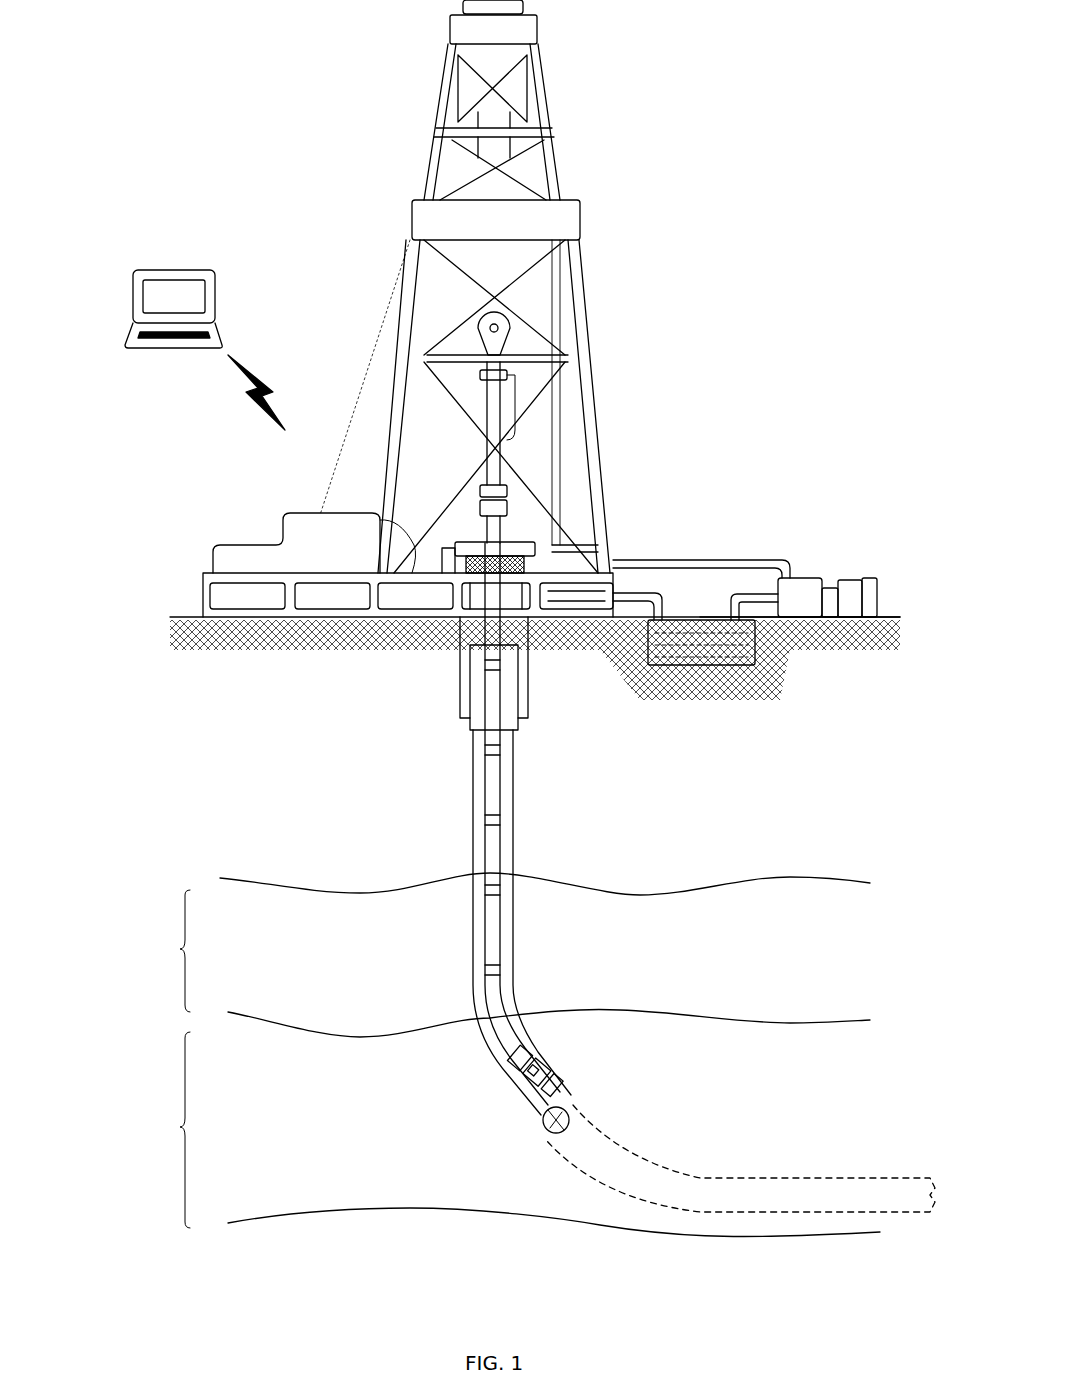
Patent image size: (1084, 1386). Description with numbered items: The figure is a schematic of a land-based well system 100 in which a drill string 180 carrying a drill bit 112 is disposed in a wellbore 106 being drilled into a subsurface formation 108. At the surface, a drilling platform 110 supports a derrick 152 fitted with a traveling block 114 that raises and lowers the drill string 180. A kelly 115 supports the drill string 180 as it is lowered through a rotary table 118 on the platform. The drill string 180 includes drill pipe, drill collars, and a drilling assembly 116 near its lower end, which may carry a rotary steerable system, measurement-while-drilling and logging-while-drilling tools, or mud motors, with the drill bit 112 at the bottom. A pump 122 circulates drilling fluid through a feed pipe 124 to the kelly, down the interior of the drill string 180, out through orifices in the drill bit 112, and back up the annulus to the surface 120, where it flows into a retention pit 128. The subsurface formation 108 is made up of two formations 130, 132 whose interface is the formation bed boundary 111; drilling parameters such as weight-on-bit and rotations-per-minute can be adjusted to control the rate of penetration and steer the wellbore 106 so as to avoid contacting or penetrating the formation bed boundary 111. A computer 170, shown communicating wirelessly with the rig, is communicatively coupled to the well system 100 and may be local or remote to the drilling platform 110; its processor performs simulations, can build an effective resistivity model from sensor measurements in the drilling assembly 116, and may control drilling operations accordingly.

The well system 100 is at (672, 148).
The derrick 152 is at (540, 112).
The traveling block 114 is at (520, 330).
The kelly 115 is at (494, 400).
The rotary table 118 is at (517, 535).
The drilling platform 110 is at (213, 583).
The subsurface formation 108 is at (848, 735).
The surface 120 is at (895, 612).
The feed pipe 124 is at (720, 558).
The pump 122 is at (800, 578).
The retention pit 128 is at (708, 665).
The wellbore 106 is at (487, 752).
The drill string 180 is at (505, 810).
The drilling assembly 116 is at (538, 1088).
The drill bit 112 is at (570, 1112).
The formation 130 is at (501, 942).
The formation bed boundary 111 is at (310, 1030).
The formation 132 is at (504, 1134).
The computer 170 is at (133, 283).